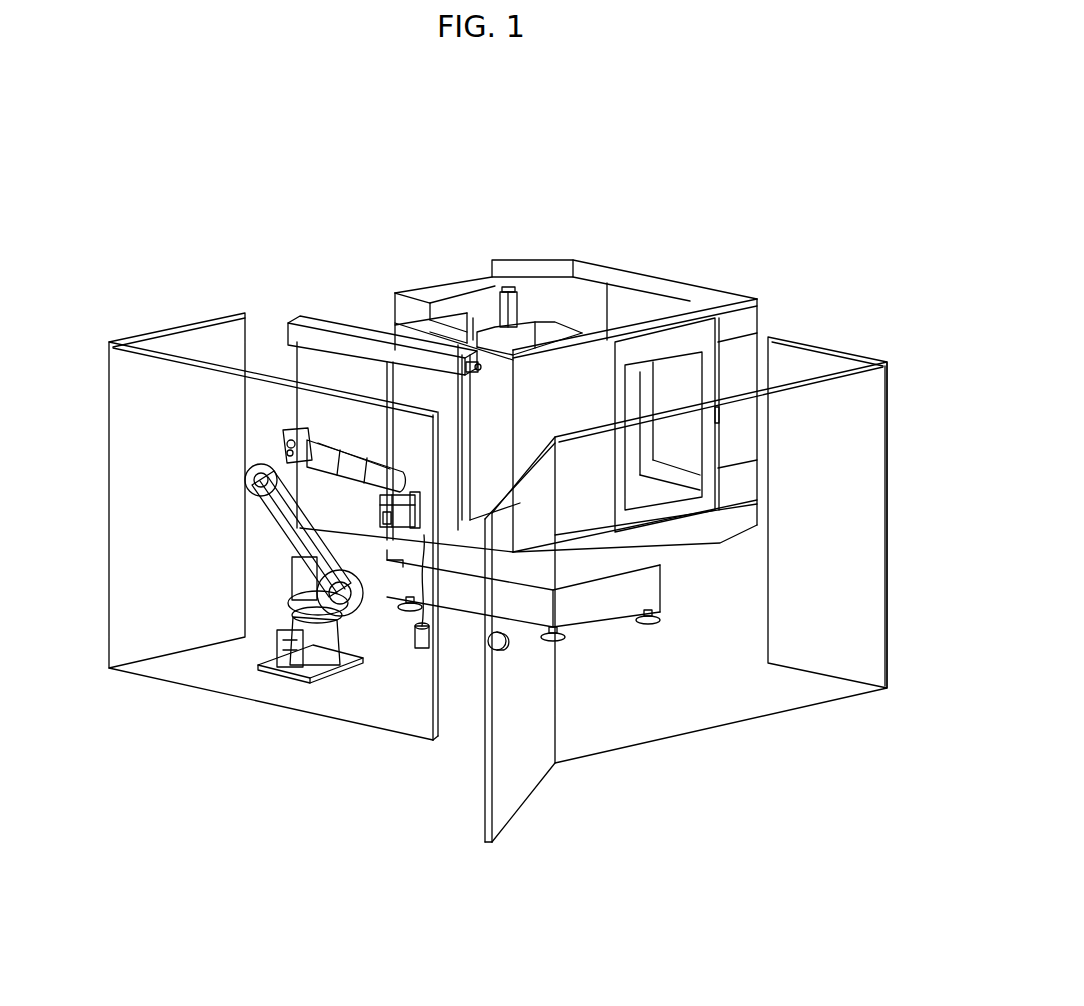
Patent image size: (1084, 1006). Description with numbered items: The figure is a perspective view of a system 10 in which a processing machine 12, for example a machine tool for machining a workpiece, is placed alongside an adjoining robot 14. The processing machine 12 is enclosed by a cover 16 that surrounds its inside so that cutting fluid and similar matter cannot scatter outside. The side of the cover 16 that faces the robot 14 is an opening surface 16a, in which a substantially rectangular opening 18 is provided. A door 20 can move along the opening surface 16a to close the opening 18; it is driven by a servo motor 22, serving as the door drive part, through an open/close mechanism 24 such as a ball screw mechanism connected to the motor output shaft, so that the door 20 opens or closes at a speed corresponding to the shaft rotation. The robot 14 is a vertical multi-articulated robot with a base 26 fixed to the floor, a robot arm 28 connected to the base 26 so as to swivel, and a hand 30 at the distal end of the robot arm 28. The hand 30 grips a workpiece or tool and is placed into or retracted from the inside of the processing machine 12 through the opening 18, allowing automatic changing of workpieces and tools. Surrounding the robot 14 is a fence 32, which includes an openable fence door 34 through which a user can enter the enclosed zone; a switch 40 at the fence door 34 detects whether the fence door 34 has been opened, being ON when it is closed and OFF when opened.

The system 10 is at (816, 98).
The processing machine 12 is at (522, 398).
The robot 14 is at (314, 522).
The cover 16 is at (584, 393).
The opening surface 16a is at (329, 373).
The opening 18 is at (468, 414).
The door 20 is at (427, 392).
The servo motor 22 is at (482, 370).
The open/close mechanism 24 is at (348, 330).
The base 26 is at (283, 645).
The robot arm 28 is at (300, 522).
The hand 30 is at (388, 530).
The fence 32 is at (182, 326).
The fence door 34 is at (518, 780).
The switch 40 is at (500, 652).